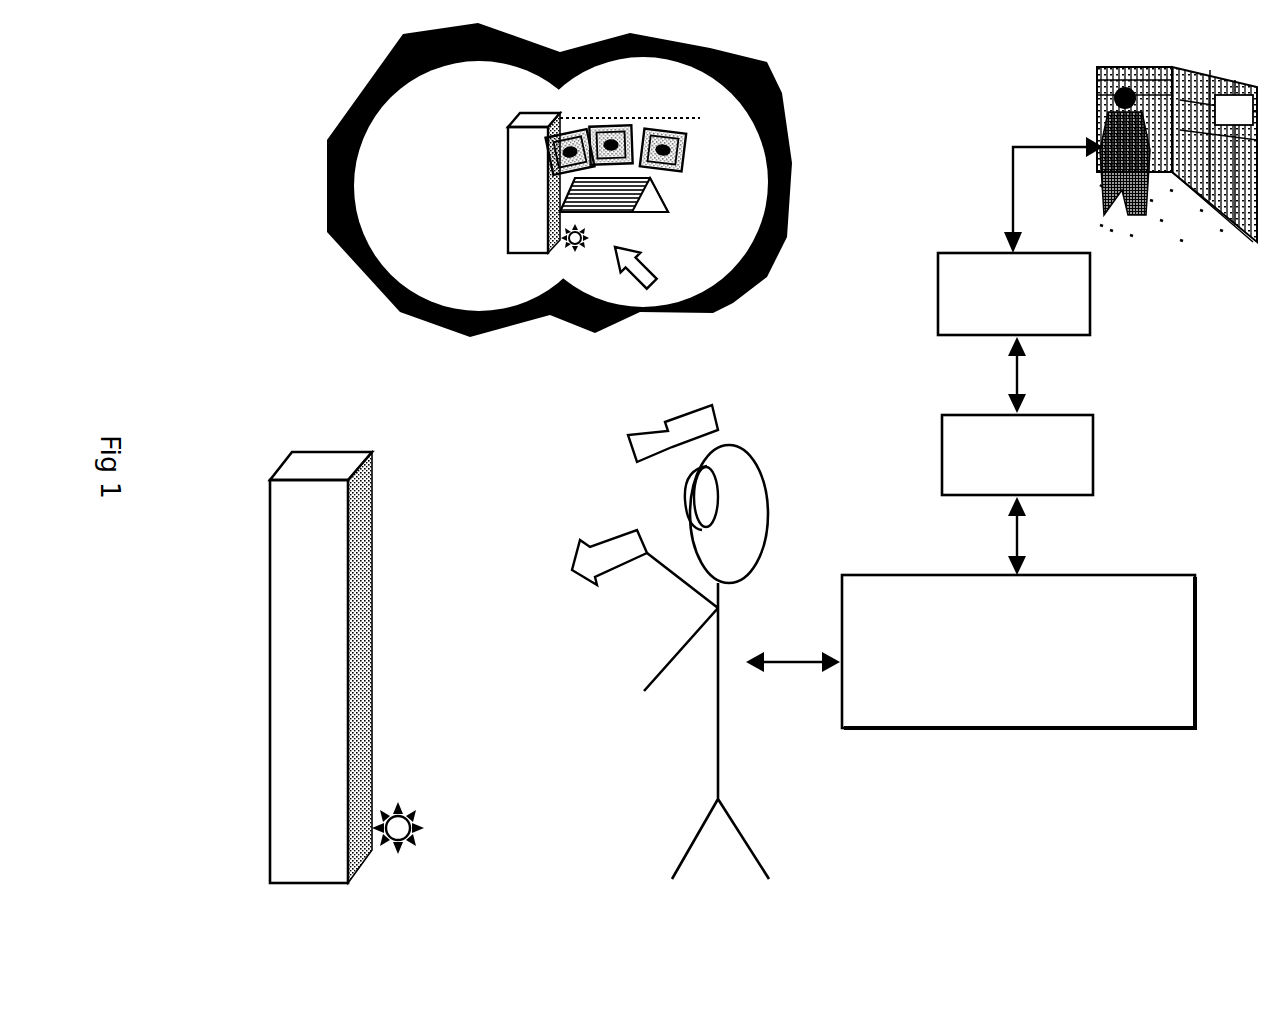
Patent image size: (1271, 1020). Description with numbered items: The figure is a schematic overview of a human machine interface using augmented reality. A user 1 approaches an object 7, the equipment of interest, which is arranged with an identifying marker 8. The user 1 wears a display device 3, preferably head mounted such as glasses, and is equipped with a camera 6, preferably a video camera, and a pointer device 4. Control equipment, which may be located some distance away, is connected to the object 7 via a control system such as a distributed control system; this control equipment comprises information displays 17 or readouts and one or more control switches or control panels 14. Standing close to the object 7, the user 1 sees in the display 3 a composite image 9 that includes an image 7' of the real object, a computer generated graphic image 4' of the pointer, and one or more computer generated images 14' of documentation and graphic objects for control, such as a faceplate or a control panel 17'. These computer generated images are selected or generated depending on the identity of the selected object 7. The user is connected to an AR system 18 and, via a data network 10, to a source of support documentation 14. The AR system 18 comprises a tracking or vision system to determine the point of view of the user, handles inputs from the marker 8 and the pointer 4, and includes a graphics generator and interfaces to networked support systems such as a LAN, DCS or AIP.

The user 1 is at (734, 708).
The display device 3 is at (673, 483).
The pointer device 4 is at (576, 718).
The camera 6 is at (607, 433).
The object 7 is at (312, 661).
The identifying marker 8 is at (413, 858).
The composite image 9 is at (328, 245).
The data network 10 is at (1072, 448).
The control panel 14 is at (1177, 182).
The information display 17 is at (1097, 236).
The AR system 18 is at (1002, 651).
The image of a real object 7' is at (405, 183).
The control panel 17' is at (693, 127).
The computer generated images of documentation 14' is at (724, 145).
The computer generated graphic image of the pointer 4' is at (792, 184).